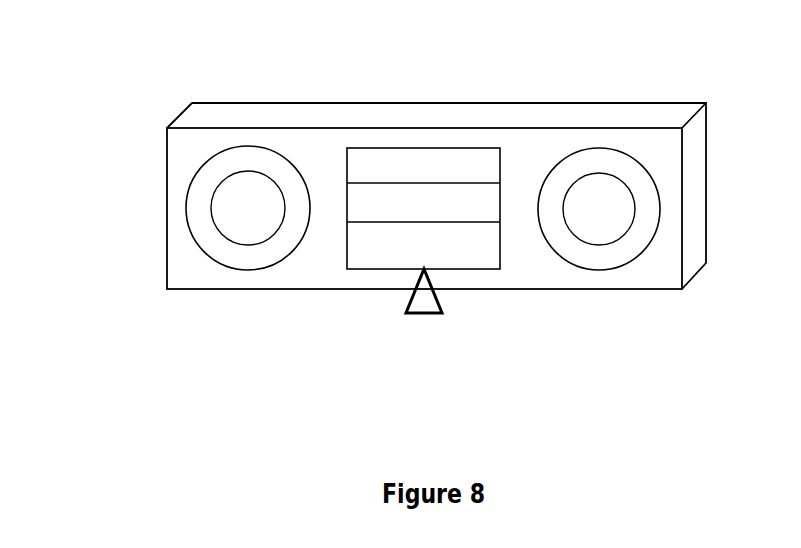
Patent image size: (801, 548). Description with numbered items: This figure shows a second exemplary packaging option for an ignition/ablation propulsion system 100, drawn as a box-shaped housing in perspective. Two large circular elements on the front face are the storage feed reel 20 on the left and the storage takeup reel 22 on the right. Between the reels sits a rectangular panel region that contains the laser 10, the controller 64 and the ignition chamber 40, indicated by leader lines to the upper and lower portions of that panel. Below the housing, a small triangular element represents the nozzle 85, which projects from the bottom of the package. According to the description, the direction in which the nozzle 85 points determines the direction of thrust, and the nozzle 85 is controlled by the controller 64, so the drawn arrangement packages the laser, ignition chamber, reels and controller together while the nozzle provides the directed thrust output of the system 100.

The ignition/ablation propulsion system 100 is at (423, 48).
The laser 10 is at (363, 198).
The storage feed reel 20 is at (215, 170).
The storage takeup reel 22 is at (628, 172).
The ignition chamber 40 is at (466, 256).
The controller 64 is at (478, 165).
The nozzle 85 is at (423, 313).